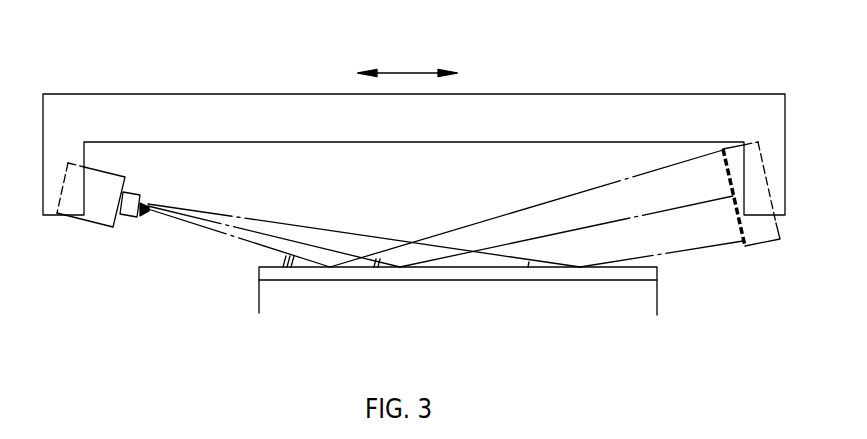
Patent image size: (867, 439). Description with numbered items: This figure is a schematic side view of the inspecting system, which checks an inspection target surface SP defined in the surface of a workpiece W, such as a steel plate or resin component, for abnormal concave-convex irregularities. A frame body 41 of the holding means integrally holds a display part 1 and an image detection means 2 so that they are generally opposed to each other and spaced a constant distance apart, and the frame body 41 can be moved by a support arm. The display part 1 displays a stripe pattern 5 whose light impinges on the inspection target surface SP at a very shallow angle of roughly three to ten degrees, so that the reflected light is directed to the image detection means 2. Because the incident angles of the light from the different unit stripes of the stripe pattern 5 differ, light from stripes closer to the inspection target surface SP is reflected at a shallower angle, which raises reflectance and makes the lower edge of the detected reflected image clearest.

The frame body 41 is at (250, 93).
The image detection means 2 is at (86, 220).
The display part 1 is at (763, 243).
The stripe pattern 5 is at (727, 170).
The inspection target surface SP is at (443, 267).
The workpiece W is at (259, 295).